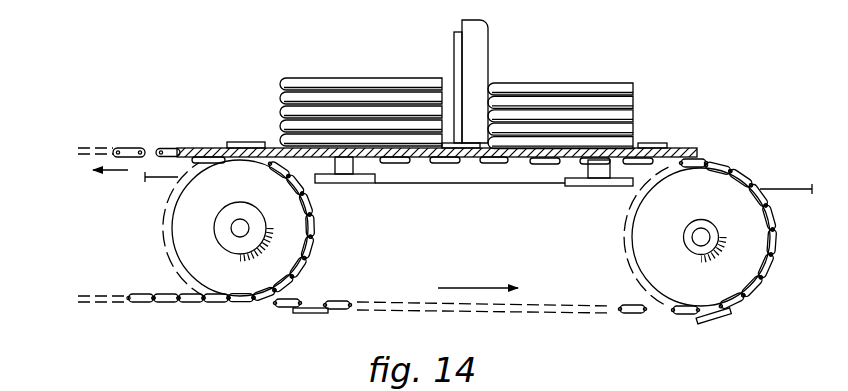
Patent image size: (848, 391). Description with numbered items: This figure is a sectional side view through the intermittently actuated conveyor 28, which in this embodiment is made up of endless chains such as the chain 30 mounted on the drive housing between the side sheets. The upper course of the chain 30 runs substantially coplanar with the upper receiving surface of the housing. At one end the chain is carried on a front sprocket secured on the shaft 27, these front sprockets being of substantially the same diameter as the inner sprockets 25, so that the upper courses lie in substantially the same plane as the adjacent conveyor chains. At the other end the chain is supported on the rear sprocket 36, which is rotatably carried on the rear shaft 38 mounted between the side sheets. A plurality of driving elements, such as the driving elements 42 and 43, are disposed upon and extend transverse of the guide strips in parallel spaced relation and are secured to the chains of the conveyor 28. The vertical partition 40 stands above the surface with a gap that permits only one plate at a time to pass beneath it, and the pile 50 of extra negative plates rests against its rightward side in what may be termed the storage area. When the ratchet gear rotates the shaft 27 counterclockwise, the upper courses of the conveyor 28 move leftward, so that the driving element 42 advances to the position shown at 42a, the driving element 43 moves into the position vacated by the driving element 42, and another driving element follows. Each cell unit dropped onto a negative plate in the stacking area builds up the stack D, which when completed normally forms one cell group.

The stack D is at (367, 76).
The inner sprocket 25 is at (295, 230).
The shaft 27 is at (244, 226).
The intermittently actuated conveyor 28 is at (733, 164).
The endless chain 30 is at (774, 219).
The rear sprocket 36 is at (758, 254).
The rear shaft 38 is at (703, 241).
The vertical partition 40 is at (458, 62).
The driving element 42 is at (461, 148).
The position of driving element 42a is at (236, 142).
The driving element 43 is at (657, 147).
The pile of extra plates 50 is at (642, 83).